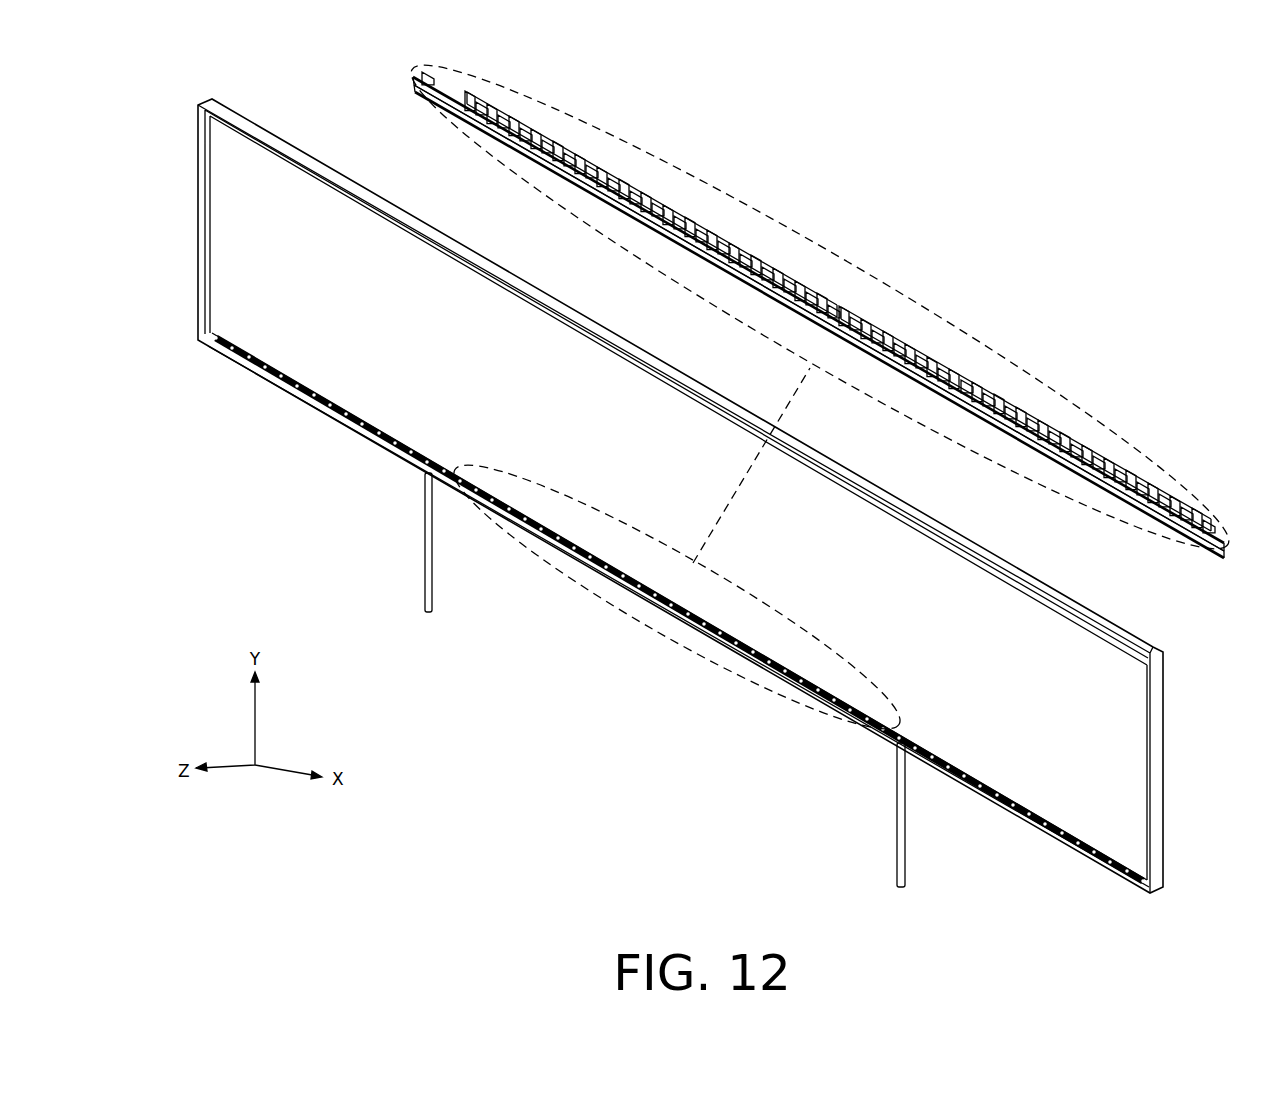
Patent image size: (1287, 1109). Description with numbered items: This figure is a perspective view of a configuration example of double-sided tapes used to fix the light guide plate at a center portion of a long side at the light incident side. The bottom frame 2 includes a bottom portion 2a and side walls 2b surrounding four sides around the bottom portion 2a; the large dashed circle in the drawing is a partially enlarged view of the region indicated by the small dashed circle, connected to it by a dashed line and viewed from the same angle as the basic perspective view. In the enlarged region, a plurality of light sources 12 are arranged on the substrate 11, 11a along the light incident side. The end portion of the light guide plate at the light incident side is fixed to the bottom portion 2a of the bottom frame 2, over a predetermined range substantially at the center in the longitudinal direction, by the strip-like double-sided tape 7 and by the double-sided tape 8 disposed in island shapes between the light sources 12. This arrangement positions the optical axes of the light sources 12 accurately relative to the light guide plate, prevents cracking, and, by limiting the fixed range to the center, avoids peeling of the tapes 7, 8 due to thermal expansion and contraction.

The bottom frame 2 is at (1165, 703).
The bottom portion 2a is at (853, 297).
The side wall 2b is at (910, 370).
The double-sided tape 7 is at (717, 227).
The double-sided tape 8 is at (660, 198).
The substrate 11 is at (657, 210).
The substrate 11a is at (819, 318).
The light source 12 is at (627, 192).